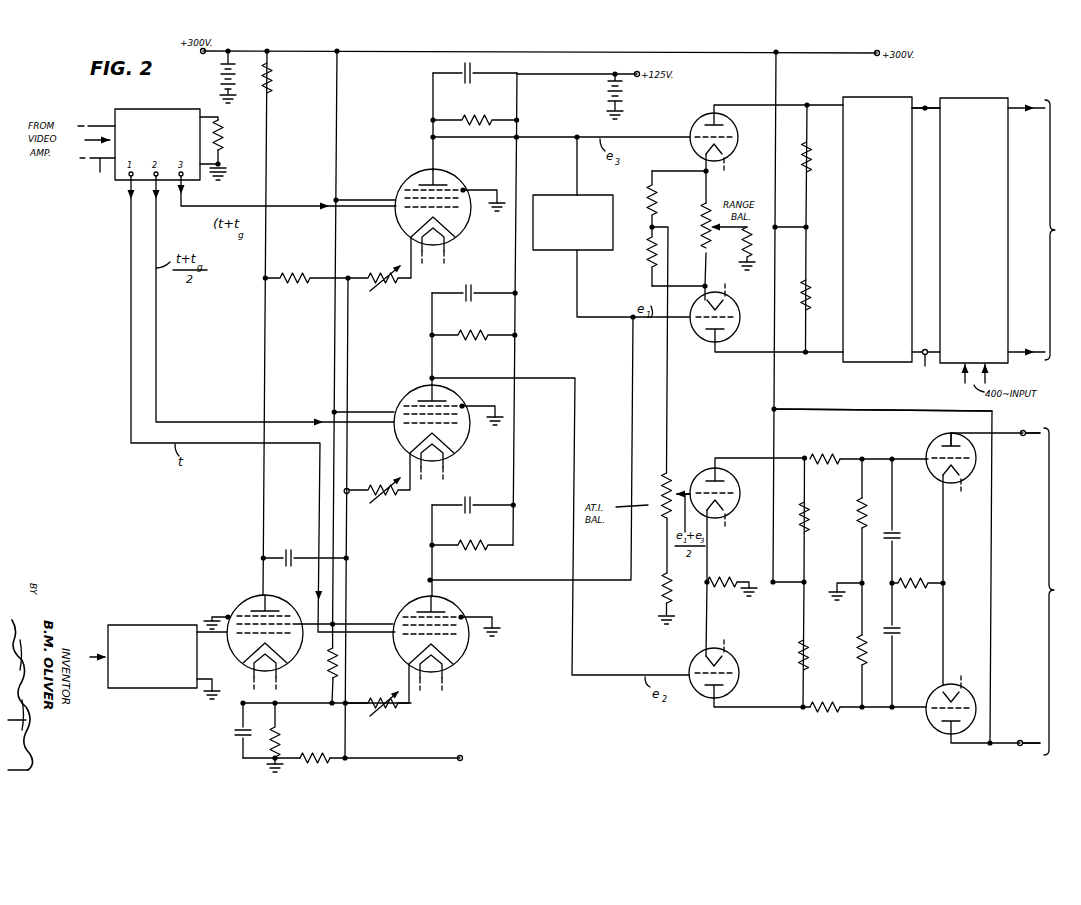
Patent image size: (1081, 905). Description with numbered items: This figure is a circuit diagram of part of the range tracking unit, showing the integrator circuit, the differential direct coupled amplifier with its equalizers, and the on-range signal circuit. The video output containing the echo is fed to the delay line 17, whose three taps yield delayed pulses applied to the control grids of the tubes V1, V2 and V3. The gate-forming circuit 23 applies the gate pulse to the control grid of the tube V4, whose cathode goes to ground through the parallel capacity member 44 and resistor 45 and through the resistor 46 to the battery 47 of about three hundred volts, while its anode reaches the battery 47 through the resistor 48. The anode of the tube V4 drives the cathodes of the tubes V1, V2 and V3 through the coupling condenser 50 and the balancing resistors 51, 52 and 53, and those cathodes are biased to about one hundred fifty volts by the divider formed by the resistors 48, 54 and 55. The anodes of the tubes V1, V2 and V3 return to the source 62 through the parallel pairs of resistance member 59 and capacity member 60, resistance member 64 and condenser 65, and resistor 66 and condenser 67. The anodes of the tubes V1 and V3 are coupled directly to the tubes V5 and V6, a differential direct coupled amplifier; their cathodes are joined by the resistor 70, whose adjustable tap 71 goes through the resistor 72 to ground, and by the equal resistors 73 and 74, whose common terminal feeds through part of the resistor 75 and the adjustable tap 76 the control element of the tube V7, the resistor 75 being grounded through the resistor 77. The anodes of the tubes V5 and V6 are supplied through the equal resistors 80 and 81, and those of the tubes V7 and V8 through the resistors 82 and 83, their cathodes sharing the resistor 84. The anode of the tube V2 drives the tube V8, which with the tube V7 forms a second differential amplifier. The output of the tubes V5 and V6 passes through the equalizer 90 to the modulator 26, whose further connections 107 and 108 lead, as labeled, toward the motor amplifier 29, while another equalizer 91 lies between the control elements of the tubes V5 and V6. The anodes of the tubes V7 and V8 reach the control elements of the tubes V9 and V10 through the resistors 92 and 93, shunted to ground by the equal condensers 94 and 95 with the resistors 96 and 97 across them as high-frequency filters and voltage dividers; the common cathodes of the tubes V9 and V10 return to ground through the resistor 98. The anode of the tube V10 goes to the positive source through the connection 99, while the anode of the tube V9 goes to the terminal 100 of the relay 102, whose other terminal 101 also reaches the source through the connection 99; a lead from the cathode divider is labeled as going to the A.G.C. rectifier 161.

The delay line 17 is at (155, 117).
The gate-forming circuit 23 is at (157, 624).
The modulator 26 is at (984, 100).
The capacity member 44 is at (238, 738).
The resistor 45 is at (270, 748).
The resistor 46 is at (325, 670).
The battery 47 is at (222, 70).
The resistor 48 is at (275, 76).
The coupling condenser 50 is at (290, 552).
The balancing resistor 51 is at (379, 695).
The balancing resistor 52 is at (390, 505).
The balancing resistor 53 is at (379, 273).
The resistor 54 is at (296, 272).
The resistor 55 is at (315, 762).
The resistance member 59 is at (475, 541).
The capacity member 60 is at (472, 500).
The source 62 is at (625, 92).
The resistance member 64 is at (473, 343).
The condenser 65 is at (470, 300).
The resistor 66 is at (472, 112).
The condenser 67 is at (463, 68).
The resistor 70 is at (700, 213).
The inner adjustable tap 71 is at (713, 205).
The resistor 72 is at (752, 258).
The resistor 73 is at (648, 192).
The resistor 74 is at (646, 262).
The resistor 75 is at (661, 489).
The adjustable tap 76 is at (676, 490).
The resistor 77 is at (660, 592).
The resistor 80 is at (810, 165).
The resistor 81 is at (812, 300).
The resistor 82 is at (800, 518).
The resistor 83 is at (810, 660).
The resistor 84 is at (724, 590).
The equalizer 90 is at (872, 100).
The equalizer 91 is at (546, 195).
The resistor 92 is at (822, 452).
The resistor 93 is at (816, 715).
The condenser 94 is at (897, 530).
The condenser 95 is at (899, 631).
The resistor 96 is at (857, 510).
The resistor 97 is at (866, 655).
The resistor 98 is at (910, 576).
The connection 99 is at (856, 413).
The terminal 100 is at (1017, 419).
The terminal 101 is at (1020, 748).
The modulator input terminal 107 is at (925, 371).
The connection 108 is at (925, 106).
The motor amplifier 29 is at (1068, 251).
The relay 102 is at (1065, 616).
The A.G.C. rectifier 161 is at (521, 759).
The tube V1 is at (458, 660).
The tube V2 is at (462, 441).
The tube V3 is at (458, 238).
The tube V4 is at (286, 606).
The tube V5 is at (706, 341).
The tube V6 is at (705, 113).
The tube V7 is at (732, 512).
The tube V8 is at (700, 702).
The tube V9 is at (934, 440).
The tube V10 is at (933, 725).